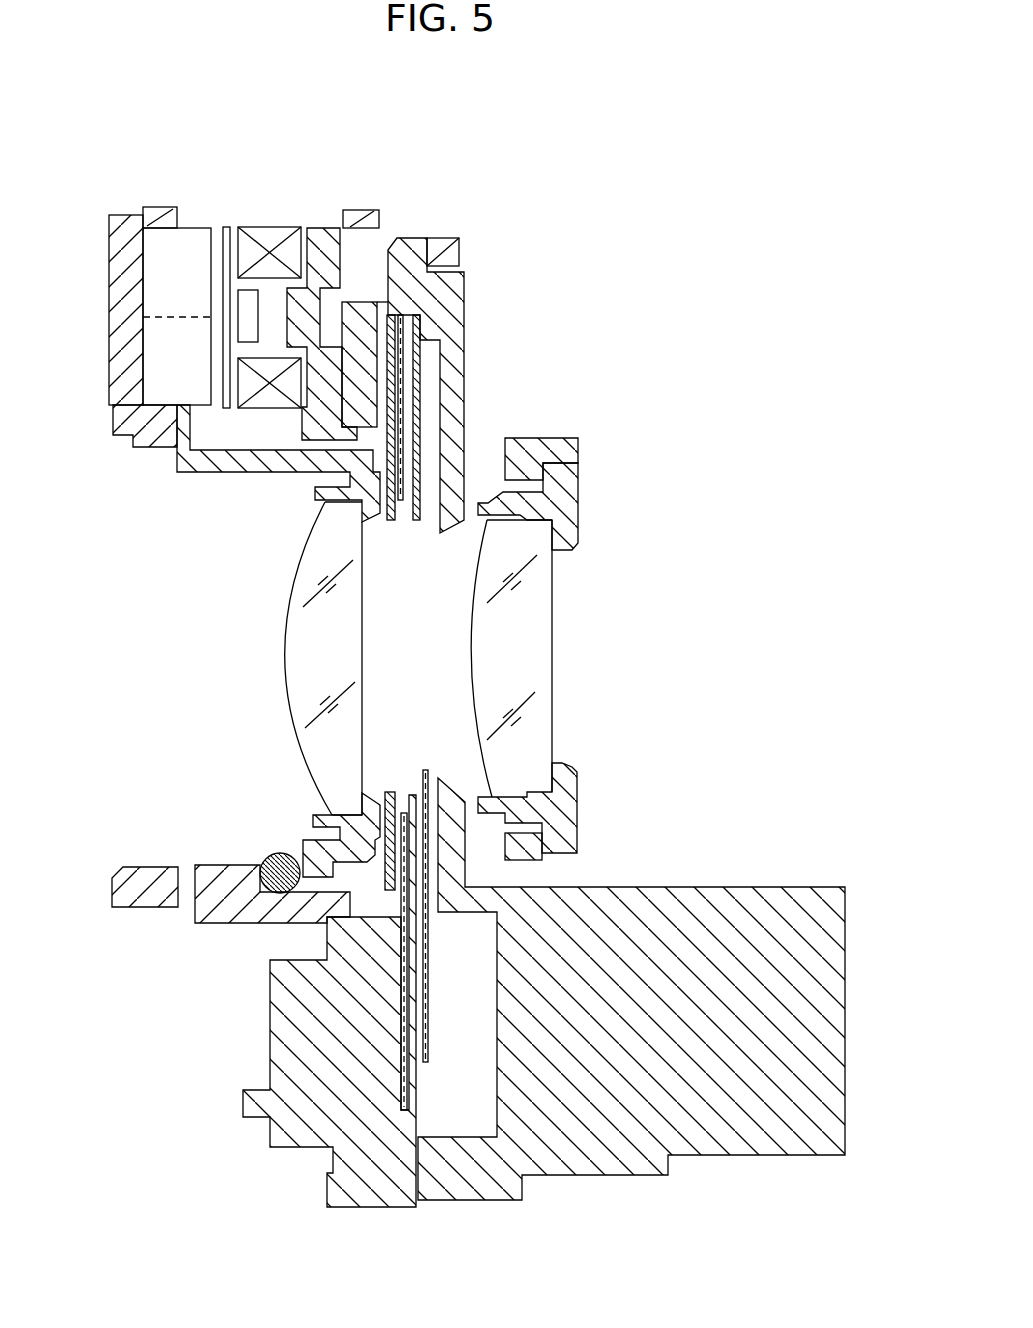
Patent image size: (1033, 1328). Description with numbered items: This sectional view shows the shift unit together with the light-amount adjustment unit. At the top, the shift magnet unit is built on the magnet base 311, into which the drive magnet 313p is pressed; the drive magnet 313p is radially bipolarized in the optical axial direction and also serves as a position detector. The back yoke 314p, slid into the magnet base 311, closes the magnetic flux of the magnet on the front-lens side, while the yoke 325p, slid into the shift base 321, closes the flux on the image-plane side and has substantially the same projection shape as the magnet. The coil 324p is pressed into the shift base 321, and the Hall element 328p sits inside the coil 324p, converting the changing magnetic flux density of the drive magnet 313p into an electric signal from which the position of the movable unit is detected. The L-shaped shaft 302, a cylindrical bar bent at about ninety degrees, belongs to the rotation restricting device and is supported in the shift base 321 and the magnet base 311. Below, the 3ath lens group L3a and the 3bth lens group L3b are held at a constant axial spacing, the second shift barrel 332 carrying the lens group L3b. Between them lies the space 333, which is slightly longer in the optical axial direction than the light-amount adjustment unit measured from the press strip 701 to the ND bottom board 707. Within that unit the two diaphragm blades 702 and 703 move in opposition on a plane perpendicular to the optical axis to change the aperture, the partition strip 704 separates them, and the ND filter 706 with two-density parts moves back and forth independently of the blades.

The magnet base 311 is at (160, 212).
The back yoke 314p is at (130, 222).
The drive magnet 313p is at (192, 240).
The coil 324p is at (268, 250).
The Hall element 328p is at (250, 315).
The yoke 325p is at (320, 228).
The shift base 321 is at (378, 218).
The diaphragm blade 703 is at (403, 302).
The ND bottom board 707 is at (450, 290).
The partition strip 704 is at (420, 362).
The space 333 is at (428, 600).
The second shift barrel 332 is at (580, 478).
The 3ath lens group L3a is at (289, 698).
The 3bth lens group L3b is at (532, 732).
The L-shaped shaft 302 is at (277, 855).
The press strip 701 is at (383, 917).
The diaphragm blade 702 is at (396, 1112).
The ND filter 706 is at (427, 990).